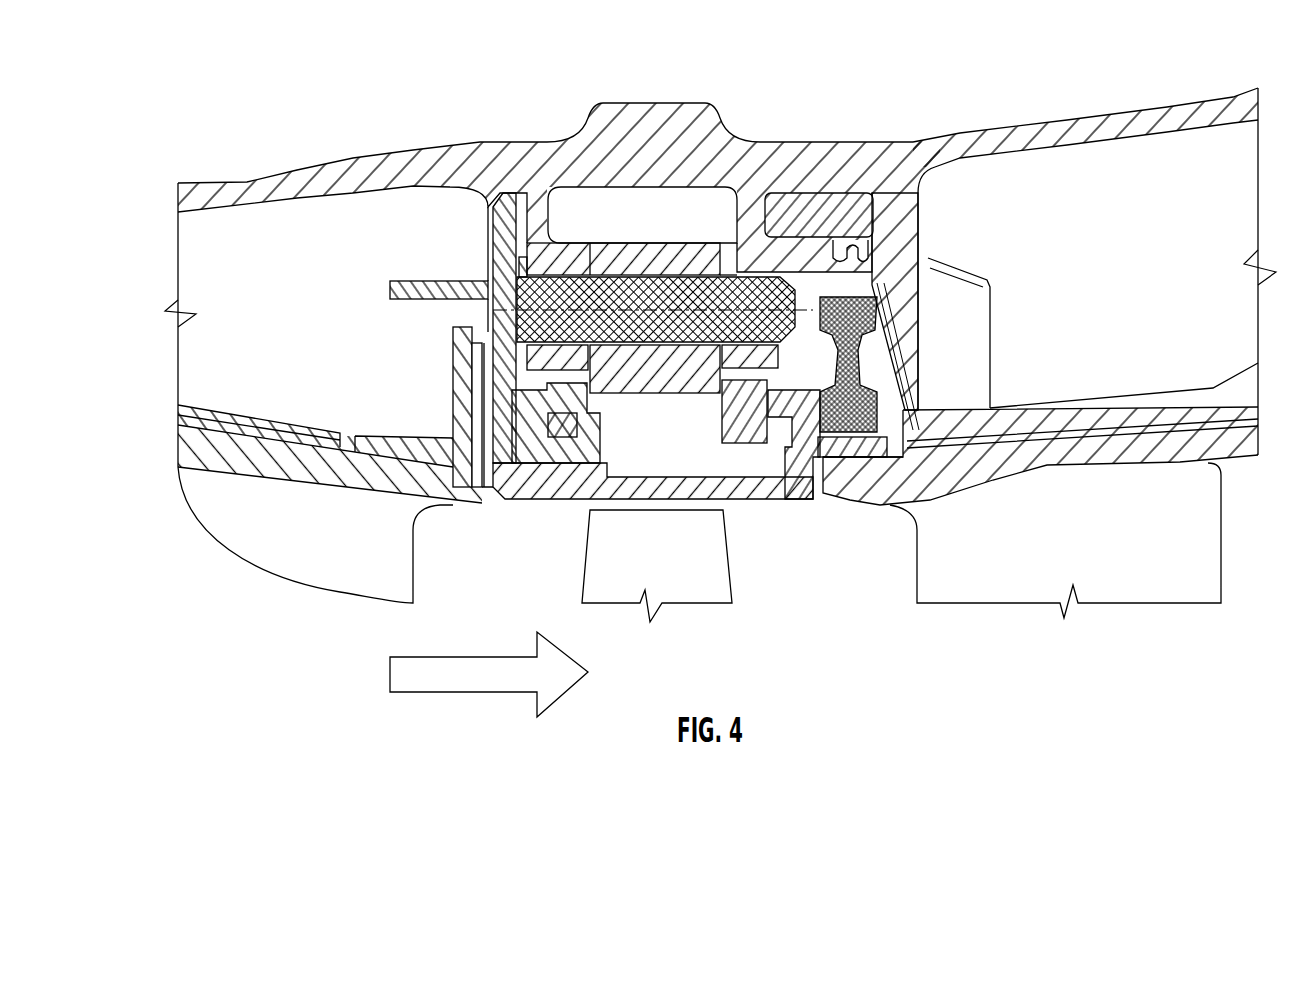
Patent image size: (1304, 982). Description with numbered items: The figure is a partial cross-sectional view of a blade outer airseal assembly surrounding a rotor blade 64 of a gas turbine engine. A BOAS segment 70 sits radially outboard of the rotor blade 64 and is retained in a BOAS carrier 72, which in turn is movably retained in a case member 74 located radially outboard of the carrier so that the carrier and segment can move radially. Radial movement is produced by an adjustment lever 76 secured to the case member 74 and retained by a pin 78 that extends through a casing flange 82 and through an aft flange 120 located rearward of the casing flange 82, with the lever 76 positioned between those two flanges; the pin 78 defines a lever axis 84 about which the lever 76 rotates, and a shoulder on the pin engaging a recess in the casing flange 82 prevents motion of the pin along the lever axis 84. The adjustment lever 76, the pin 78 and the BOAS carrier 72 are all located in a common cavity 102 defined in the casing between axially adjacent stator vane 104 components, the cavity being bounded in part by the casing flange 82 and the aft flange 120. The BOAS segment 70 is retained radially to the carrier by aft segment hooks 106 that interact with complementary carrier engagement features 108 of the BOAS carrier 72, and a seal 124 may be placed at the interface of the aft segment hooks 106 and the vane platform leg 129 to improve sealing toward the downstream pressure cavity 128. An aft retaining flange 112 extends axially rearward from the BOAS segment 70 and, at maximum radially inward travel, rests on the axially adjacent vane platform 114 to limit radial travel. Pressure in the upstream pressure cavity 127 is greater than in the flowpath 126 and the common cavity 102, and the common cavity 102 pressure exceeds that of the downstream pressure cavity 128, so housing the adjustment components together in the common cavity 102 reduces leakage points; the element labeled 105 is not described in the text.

The rotor blade 64 is at (612, 568).
The BOAS segment 70 is at (750, 501).
The BOAS carrier 72 is at (725, 402).
The case member 74 is at (655, 132).
The adjustment lever 76 is at (728, 262).
The pin 78 is at (590, 268).
The casing flange 82 is at (498, 192).
The lever axis 84 is at (798, 228).
The common cavity 102 is at (648, 188).
The stator vane 104 is at (312, 557).
The liner wall 105 is at (540, 495).
The aft segment hook 106 is at (925, 380).
The carrier engagement feature 108 is at (492, 334).
The aft retaining flange 112 is at (858, 497).
The vane platform 114 is at (893, 495).
The aft flange 120 is at (808, 257).
The seal 124 is at (945, 283).
The flowpath 126 is at (432, 678).
The upstream pressure cavity 127 is at (486, 236).
The downstream pressure cavity 128 is at (1160, 229).
The vane platform leg 129 is at (920, 232).